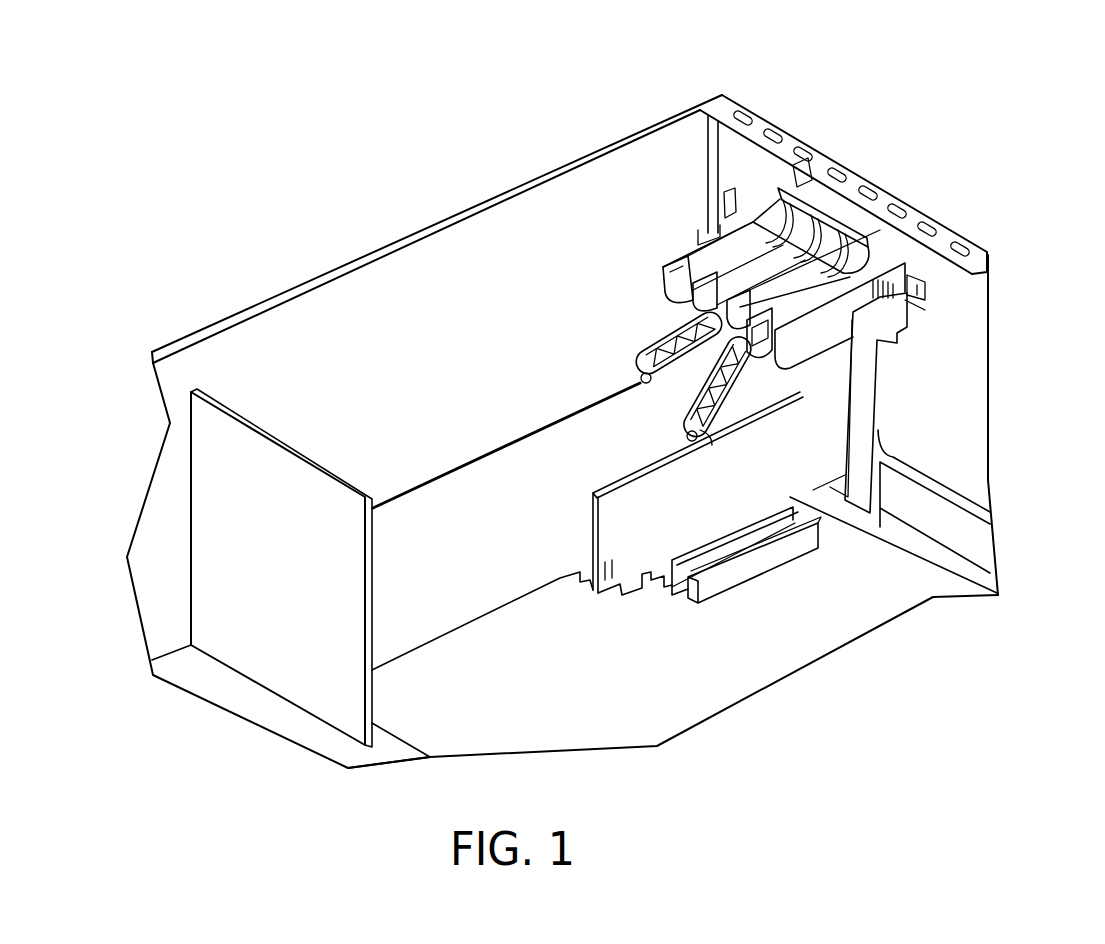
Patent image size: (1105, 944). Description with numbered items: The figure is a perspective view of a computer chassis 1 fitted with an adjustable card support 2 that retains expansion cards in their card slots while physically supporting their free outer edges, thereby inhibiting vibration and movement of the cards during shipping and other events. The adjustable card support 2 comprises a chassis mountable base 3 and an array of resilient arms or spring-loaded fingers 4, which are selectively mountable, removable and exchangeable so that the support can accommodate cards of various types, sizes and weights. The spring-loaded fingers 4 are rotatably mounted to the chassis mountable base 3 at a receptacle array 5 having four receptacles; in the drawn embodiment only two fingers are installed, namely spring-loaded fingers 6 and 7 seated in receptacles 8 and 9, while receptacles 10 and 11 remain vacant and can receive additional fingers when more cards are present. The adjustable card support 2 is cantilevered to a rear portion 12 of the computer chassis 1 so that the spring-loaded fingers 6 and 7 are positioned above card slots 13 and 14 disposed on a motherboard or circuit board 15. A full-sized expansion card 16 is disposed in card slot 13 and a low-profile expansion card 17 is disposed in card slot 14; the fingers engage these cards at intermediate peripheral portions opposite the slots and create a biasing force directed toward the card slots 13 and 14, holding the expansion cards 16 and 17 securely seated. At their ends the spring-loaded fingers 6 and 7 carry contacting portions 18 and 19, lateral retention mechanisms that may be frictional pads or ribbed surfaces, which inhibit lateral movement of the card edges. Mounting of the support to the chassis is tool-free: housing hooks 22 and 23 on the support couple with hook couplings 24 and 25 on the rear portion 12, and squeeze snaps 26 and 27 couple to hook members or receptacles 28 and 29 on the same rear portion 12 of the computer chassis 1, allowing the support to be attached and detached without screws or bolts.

The computer chassis 1 is at (766, 86).
The adjustable card support 2 is at (838, 352).
The chassis mountable base 3 is at (820, 376).
The spring-loaded fingers 4 is at (737, 408).
The receptacle array 5 is at (663, 287).
The spring-loaded finger 6 is at (703, 442).
The spring-loaded finger 7 is at (640, 383).
The receptacle 8 is at (712, 358).
The receptacle 9 is at (663, 319).
The vacant receptacle 10 is at (759, 342).
The vacant receptacle 11 is at (653, 299).
The rear portion 12 is at (1004, 267).
The card slot 13 is at (668, 594).
The card slot 14 is at (573, 590).
The circuit board 15 is at (749, 654).
The full-sized expansion card 16 is at (455, 622).
The low-profile expansion card 17 is at (609, 563).
The contacting portion 18 is at (709, 438).
The contacting portion 19 is at (650, 384).
The housing hook 22 is at (858, 197).
The housing hook 23 is at (810, 166).
The hook coupling 24 is at (898, 202).
The hook coupling 25 is at (814, 132).
The squeeze snap 26 is at (917, 297).
The squeeze snap 27 is at (735, 212).
The hook member or receptacle 28 is at (915, 276).
The hook member or receptacle 29 is at (766, 192).